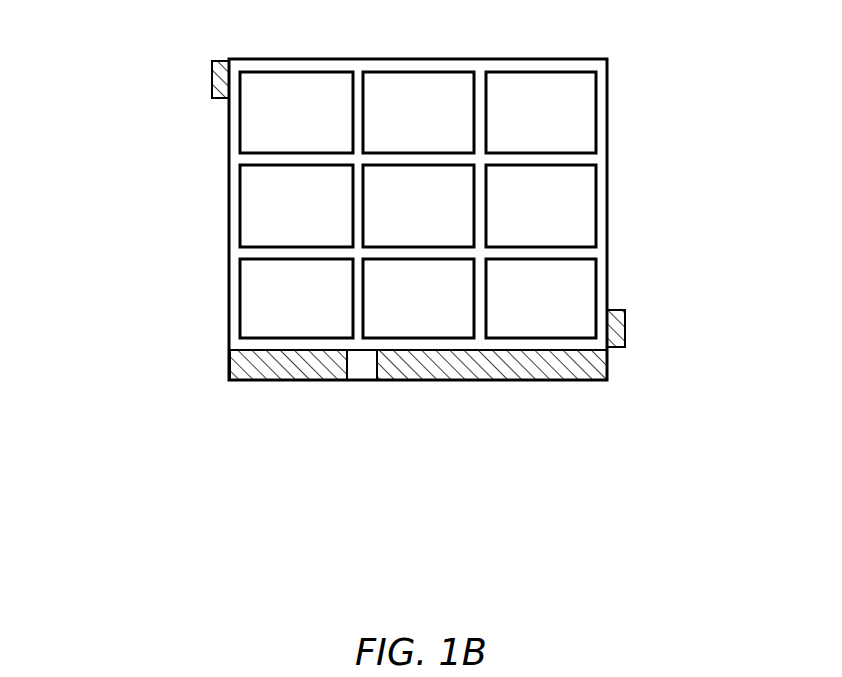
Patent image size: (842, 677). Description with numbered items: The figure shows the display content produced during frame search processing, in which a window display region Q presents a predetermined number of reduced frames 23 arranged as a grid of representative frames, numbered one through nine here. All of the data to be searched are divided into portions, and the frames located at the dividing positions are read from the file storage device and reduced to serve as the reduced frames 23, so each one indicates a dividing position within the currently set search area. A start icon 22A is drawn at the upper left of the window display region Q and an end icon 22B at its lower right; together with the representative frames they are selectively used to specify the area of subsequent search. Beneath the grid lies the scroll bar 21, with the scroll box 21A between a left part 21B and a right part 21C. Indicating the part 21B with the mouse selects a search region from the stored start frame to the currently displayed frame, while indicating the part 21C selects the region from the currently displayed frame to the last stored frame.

The window display region Q is at (607, 210).
The reduced frames 23 is at (580, 107).
The scroll bar 21 is at (418, 472).
The scroll box 21A is at (358, 381).
The part of scroll bar before scroll box 21B is at (247, 381).
The part of scroll bar after scroll box 21C is at (530, 381).
The start icon 22A is at (212, 72).
The end icon 22B is at (625, 325).